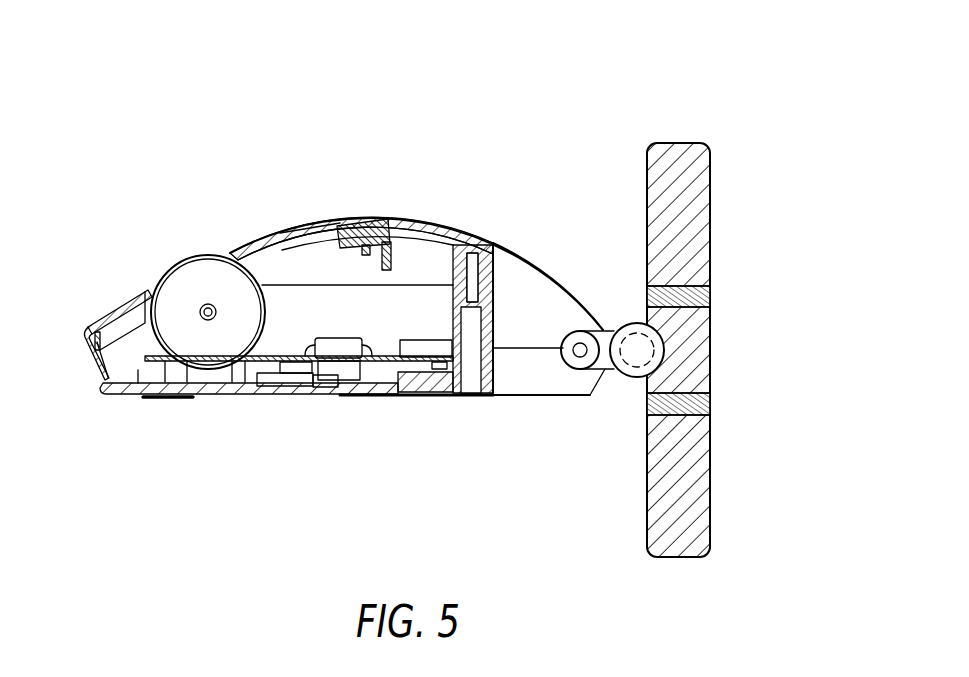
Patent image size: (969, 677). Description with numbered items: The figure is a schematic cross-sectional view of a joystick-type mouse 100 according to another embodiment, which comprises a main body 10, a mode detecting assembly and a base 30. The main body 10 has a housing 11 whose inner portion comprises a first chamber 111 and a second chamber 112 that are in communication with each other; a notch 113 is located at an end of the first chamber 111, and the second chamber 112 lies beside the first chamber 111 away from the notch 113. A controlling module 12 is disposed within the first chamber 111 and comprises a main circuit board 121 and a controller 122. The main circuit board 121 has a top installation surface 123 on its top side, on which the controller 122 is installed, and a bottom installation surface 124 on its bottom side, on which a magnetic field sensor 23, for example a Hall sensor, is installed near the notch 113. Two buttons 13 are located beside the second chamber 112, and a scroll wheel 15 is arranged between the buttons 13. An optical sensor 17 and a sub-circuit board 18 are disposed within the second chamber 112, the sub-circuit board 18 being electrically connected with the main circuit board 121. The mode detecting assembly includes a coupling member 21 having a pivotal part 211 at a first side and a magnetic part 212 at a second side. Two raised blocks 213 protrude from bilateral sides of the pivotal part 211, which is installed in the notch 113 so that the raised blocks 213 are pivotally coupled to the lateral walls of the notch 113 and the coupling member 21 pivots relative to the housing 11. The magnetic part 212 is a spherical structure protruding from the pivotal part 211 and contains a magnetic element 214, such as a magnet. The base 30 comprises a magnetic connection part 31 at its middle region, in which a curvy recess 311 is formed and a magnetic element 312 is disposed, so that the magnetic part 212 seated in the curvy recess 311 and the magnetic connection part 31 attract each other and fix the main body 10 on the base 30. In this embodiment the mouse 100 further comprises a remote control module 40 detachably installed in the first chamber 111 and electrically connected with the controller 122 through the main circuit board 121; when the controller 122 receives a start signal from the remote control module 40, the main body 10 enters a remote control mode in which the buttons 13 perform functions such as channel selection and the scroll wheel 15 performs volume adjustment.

The joystick-type mouse 100 is at (99, 39).
The main body 10 is at (245, 220).
The housing 11 is at (487, 240).
The first chamber 111 is at (423, 345).
The second chamber 112 is at (110, 318).
The notch 113 is at (520, 290).
The controlling module 12 is at (405, 150).
The main circuit board 121 is at (303, 333).
The controller 122 is at (327, 343).
The top installation surface 123 is at (383, 352).
The bottom installation surface 124 is at (397, 345).
The buttons 13 is at (133, 340).
The scroll wheel 15 is at (196, 272).
The optical sensor 17 is at (270, 386).
The sub-circuit board 18 is at (143, 394).
The coupling member 21 is at (633, 493).
The pivotal part 211 is at (608, 369).
The magnetic part 212 is at (638, 378).
The raised blocks 213 is at (577, 366).
The magnetic element 214 is at (628, 362).
The magnetic field sensor 23 is at (441, 369).
The base 30 is at (728, 130).
The magnetic connection part 31 is at (779, 238).
The curvy recess 311 is at (645, 302).
The magnetic element 312 is at (708, 296).
The remote control module 40 is at (433, 300).